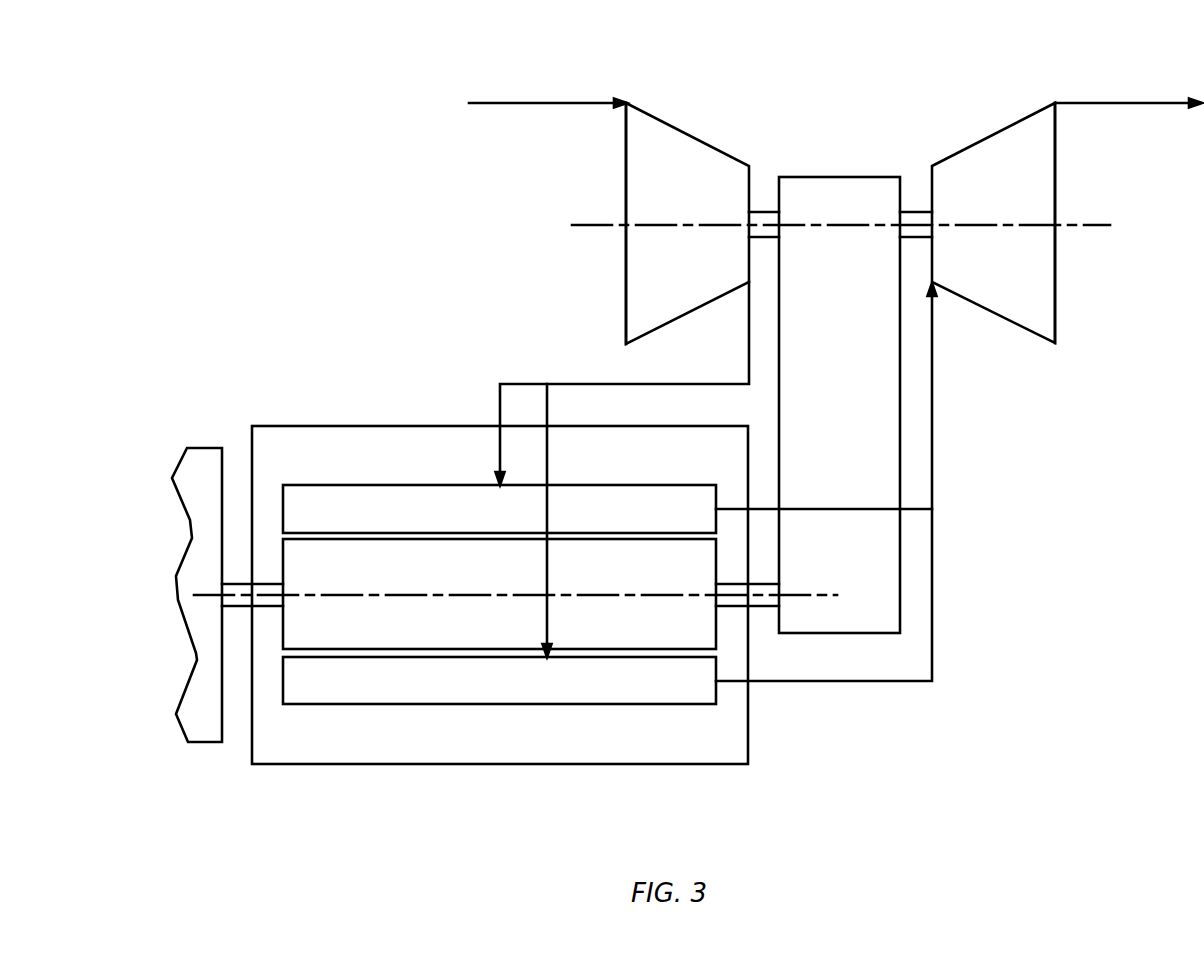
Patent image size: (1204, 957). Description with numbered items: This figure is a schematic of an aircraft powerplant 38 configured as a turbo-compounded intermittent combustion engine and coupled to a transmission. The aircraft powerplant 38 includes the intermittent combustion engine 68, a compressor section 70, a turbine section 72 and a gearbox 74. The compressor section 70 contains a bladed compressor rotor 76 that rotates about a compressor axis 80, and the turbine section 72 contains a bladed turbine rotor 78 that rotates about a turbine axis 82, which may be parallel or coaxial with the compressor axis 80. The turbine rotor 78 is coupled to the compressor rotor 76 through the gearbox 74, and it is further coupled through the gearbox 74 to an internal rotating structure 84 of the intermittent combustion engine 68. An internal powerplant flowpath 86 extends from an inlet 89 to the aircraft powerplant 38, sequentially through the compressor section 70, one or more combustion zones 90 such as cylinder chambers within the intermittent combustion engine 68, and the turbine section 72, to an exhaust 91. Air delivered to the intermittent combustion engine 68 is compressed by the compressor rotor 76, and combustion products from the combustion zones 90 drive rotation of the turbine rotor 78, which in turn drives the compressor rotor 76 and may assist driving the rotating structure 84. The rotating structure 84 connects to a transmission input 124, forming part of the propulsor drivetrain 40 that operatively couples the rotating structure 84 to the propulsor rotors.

The aircraft powerplant 38 is at (298, 163).
The inlet 89 is at (505, 102).
The compressor section 70 is at (698, 114).
The compressor rotor 76 is at (626, 154).
The compressor axis 80 is at (577, 226).
The gearbox 74 is at (839, 157).
The turbine section 72 is at (990, 120).
The turbine rotor 78 is at (1057, 138).
The turbine axis 82 is at (1102, 226).
The exhaust 91 is at (1172, 100).
The powerplant flowpath 86 is at (603, 383).
The intermittent combustion engine 68 is at (488, 782).
The combustion zones 90 is at (455, 523).
The rotating structure 84 is at (619, 580).
The transmission input 124 is at (235, 607).
The propulsor drivetrain 40 is at (203, 762).